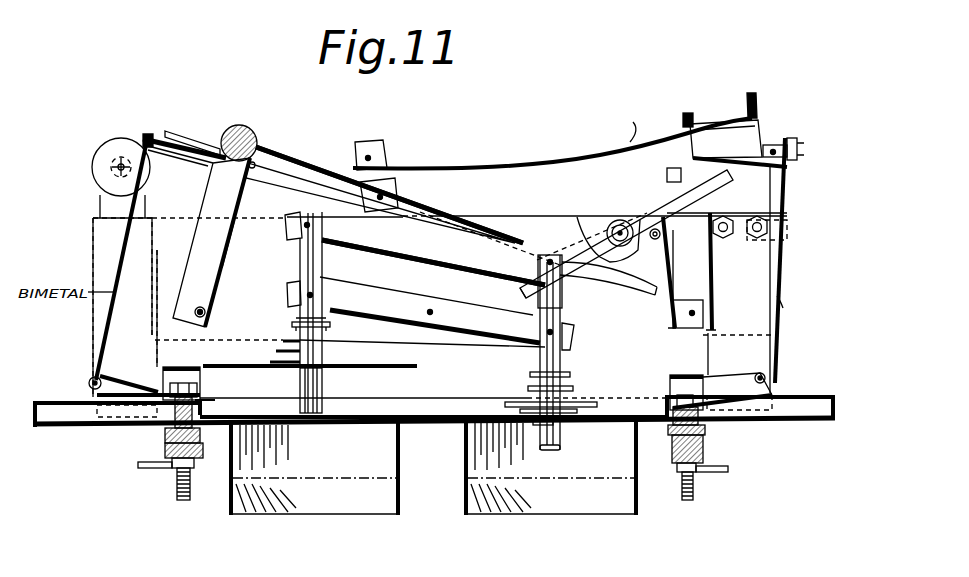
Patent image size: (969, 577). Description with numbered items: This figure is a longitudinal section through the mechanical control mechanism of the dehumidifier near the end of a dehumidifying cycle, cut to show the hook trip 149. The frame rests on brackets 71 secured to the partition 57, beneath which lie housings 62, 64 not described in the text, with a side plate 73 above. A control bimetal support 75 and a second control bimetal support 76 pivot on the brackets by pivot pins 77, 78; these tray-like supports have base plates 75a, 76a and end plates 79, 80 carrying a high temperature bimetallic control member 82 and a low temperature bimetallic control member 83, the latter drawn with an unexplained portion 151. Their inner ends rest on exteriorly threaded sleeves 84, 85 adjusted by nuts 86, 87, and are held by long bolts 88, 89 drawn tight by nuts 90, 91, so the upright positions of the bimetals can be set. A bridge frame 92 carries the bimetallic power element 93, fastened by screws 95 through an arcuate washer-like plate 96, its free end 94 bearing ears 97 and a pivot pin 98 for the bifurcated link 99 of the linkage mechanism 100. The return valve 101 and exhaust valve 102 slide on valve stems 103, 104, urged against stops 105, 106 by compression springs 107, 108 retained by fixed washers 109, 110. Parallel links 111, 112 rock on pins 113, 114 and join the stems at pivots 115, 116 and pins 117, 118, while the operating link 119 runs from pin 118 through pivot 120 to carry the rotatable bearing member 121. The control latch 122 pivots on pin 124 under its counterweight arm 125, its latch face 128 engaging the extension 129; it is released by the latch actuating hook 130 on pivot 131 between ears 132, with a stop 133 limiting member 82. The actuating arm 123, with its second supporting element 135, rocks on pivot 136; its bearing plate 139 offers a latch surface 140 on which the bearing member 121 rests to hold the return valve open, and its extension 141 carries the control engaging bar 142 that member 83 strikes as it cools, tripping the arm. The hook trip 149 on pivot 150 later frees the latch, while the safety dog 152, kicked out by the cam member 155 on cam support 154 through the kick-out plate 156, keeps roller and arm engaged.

The partition 57 is at (817, 418).
The cup housing 62 is at (400, 500).
The cup housing 64 is at (467, 498).
The brackets 71 is at (100, 403).
The side plate 73 is at (597, 216).
The control bimetal support 75 is at (747, 415).
The base plate 75a is at (670, 397).
The second control bimetal support 76 is at (150, 380).
The base plate 76a is at (197, 402).
The pivot pin 77 is at (762, 378).
The pivot pin 78 is at (110, 383).
The end plate 79 is at (763, 342).
The end plate 80 is at (100, 368).
The high temperature bimetallic control member 82 is at (790, 180).
The low temperature bimetallic control member 83 is at (123, 252).
The exteriorly threaded sleeve 84 is at (705, 457).
The exteriorly threaded sleeve 85 is at (167, 450).
The nut 86 is at (705, 430).
The nut 87 is at (163, 432).
The bolt 88 is at (695, 497).
The bolt 89 is at (177, 485).
The nut 90 is at (678, 470).
The nut 91 is at (203, 465).
The bridge frame 92 is at (760, 126).
The bimetallic power element 93 is at (540, 148).
The free end 94 is at (387, 167).
The screws 95 is at (720, 117).
The arcuate washer-like plate 96 is at (693, 93).
The ears 97 is at (360, 143).
The pivot pin 98 is at (367, 158).
The bifurcated link 99 is at (385, 175).
The linkage mechanism 100 is at (299, 133).
The return valve 101 is at (256, 367).
The exhaust valve 102 is at (473, 414).
The valve stem 103 is at (322, 270).
The valve stem 104 is at (555, 310).
The stop 105 is at (307, 372).
The stop 106 is at (540, 423).
The compression spring 107 is at (352, 351).
The compression spring 108 is at (571, 389).
The fixed washer 109 is at (293, 320).
The fixed washer 110 is at (537, 371).
The parallel link 111 is at (490, 338).
The parallel link 112 is at (455, 264).
The pin 113 is at (431, 312).
The pin 114 is at (407, 262).
The pivot 115 is at (305, 296).
The pivot 116 is at (560, 353).
The pin 117 is at (305, 228).
The pin 118 is at (550, 261).
The operating link 119 is at (463, 227).
The pivot 120 is at (410, 202).
The rotatable bearing member 121 is at (250, 127).
The control latch 122 is at (670, 243).
The actuating arm 123 is at (218, 237).
The pin 124 is at (693, 313).
The counterweight arm 125 is at (668, 172).
The latch face 128 is at (662, 200).
The extension 129 is at (630, 284).
The latch actuating hook 130 is at (753, 164).
The pivot 131 is at (773, 149).
The ears 132 is at (770, 153).
The stop 133 is at (783, 240).
The second supporting element 135 is at (203, 245).
The pivot 136 is at (200, 312).
The bearing plate 139 is at (218, 282).
The latch surface 140 is at (178, 182).
The extension 141 is at (190, 163).
The control engaging bar 142 is at (143, 140).
The hook trip 149 is at (521, 296).
The pivot 150 is at (617, 232).
The bimetal strip 151 is at (150, 280).
The safety dog 152 is at (150, 139).
The cam support 154 is at (113, 207).
The cam member 155 is at (97, 161).
The kick-out plate 156 is at (198, 117).